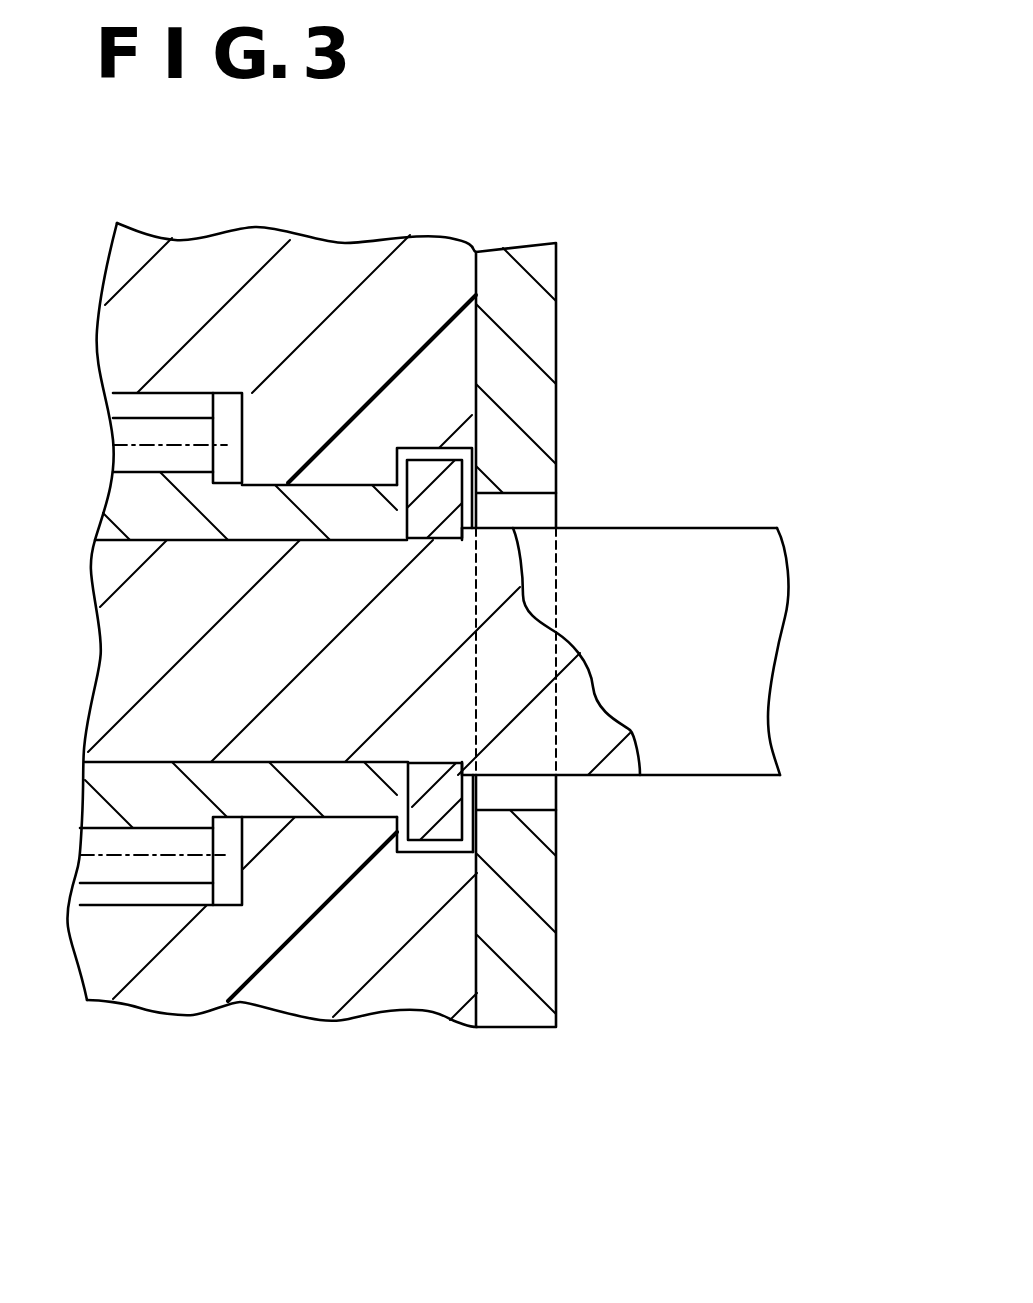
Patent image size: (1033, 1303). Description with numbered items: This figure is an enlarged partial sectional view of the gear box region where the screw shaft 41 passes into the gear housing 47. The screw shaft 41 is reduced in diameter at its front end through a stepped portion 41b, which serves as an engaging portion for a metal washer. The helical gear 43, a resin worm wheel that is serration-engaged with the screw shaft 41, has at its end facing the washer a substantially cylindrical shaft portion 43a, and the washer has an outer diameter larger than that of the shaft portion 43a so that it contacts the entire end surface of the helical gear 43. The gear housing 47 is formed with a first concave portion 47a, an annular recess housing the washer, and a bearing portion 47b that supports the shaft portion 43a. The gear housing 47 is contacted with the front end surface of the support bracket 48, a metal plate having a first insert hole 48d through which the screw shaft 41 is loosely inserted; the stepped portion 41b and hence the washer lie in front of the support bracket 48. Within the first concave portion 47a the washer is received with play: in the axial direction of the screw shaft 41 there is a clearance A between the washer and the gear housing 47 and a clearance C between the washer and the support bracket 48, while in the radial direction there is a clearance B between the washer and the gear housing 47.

The screw shaft 41 is at (773, 575).
The stepped portion 41b is at (437, 543).
The helical gear 43 is at (120, 500).
The shaft portion 43a is at (265, 512).
The gear housing 47 is at (427, 268).
The first concave portion 47a is at (422, 455).
The bearing portion 47b is at (333, 483).
The support bracket 48 is at (538, 335).
The first insert hole 48d is at (530, 493).
The clearance A is at (397, 823).
The clearance B is at (435, 847).
The clearance C is at (465, 830).